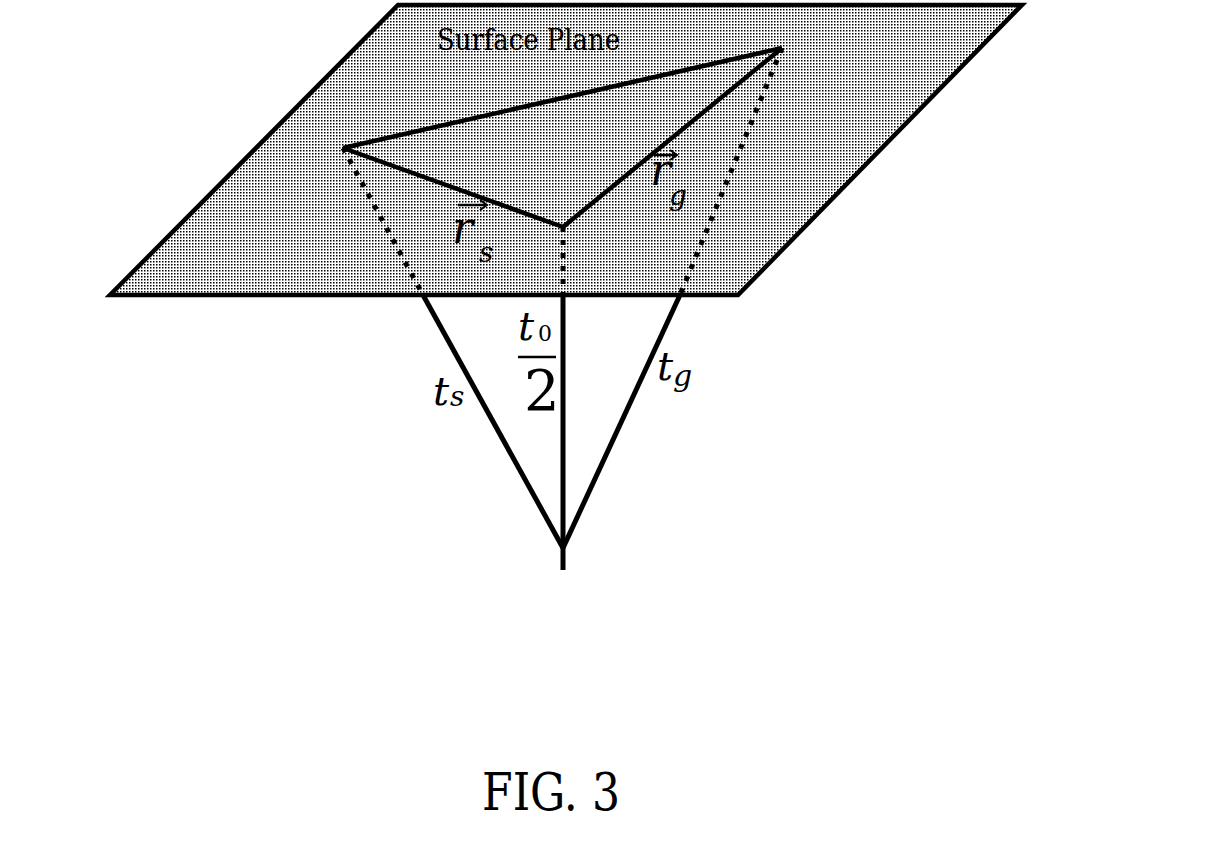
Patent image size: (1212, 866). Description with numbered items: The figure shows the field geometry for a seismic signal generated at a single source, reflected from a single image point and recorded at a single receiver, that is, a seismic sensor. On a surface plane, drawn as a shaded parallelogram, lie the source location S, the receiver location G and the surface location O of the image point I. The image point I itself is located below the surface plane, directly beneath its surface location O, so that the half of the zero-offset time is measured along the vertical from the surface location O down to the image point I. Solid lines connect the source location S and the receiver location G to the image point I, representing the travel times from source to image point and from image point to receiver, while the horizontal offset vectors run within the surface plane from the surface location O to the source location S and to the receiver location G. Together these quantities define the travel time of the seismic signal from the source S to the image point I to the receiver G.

The source location S is at (547, 171).
The receiver location G is at (692, 154).
The surface location of the image point O is at (562, 236).
The image point I is at (551, 447).